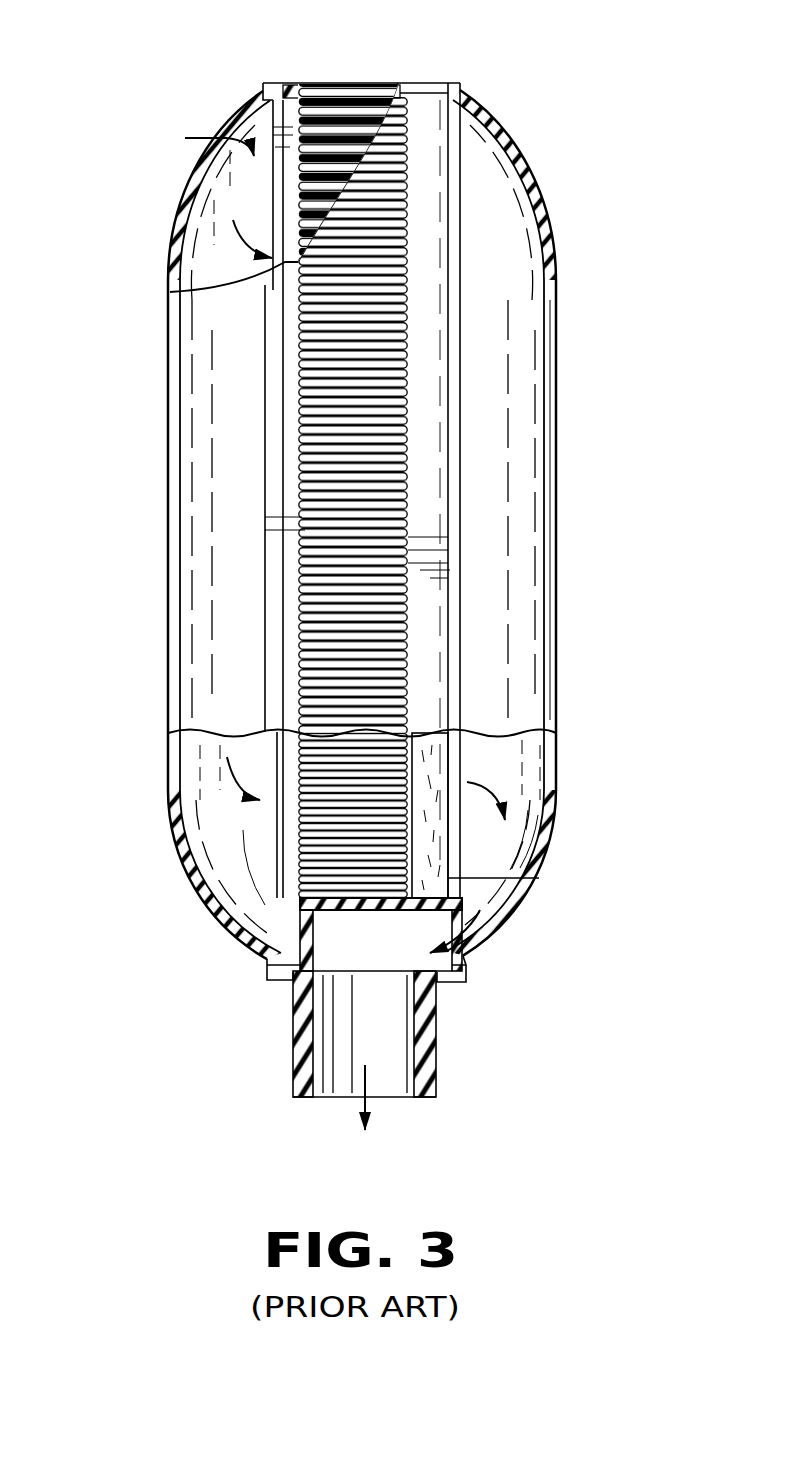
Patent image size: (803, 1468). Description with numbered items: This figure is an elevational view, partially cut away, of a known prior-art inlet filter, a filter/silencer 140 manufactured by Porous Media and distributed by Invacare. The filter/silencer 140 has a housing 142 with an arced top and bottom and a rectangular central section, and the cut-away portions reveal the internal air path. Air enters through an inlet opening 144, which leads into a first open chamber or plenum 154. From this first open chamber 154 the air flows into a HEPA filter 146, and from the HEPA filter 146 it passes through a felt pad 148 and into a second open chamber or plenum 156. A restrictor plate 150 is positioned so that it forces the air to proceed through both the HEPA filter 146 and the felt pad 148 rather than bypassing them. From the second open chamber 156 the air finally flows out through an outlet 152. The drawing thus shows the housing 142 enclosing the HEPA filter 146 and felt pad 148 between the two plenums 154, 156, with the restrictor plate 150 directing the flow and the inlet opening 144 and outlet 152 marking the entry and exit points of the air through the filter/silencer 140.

The filter/silencer 140 is at (368, 571).
The housing 142 is at (177, 837).
The inlet opening 144 is at (218, 133).
The HEPA filter 146 is at (323, 120).
The felt pad 148 is at (443, 862).
The restrictor plate 150 is at (373, 910).
The outlet 152 is at (437, 1050).
The first open chamber or plenum 154 is at (213, 812).
The second open chamber or plenum 156 is at (523, 770).